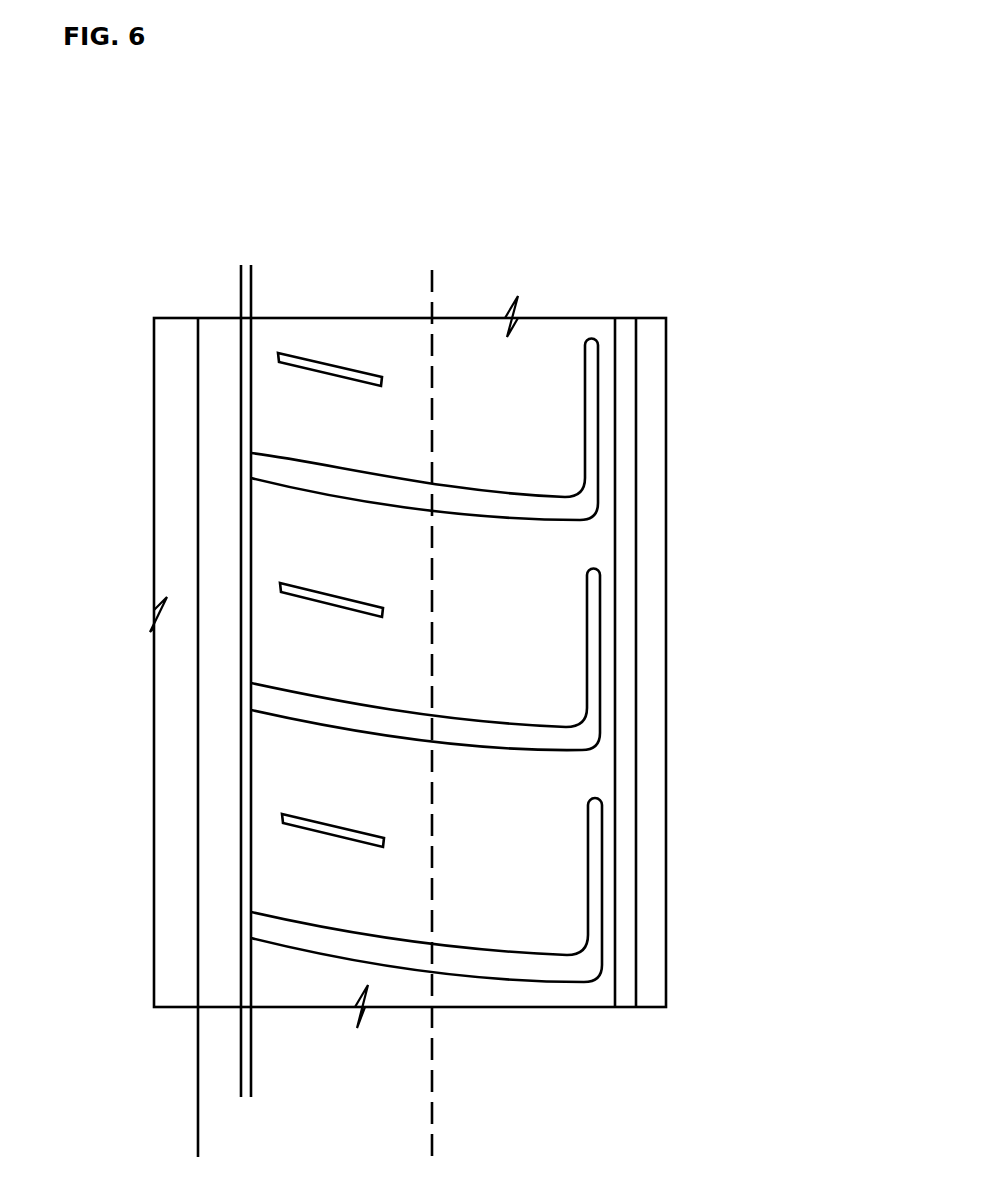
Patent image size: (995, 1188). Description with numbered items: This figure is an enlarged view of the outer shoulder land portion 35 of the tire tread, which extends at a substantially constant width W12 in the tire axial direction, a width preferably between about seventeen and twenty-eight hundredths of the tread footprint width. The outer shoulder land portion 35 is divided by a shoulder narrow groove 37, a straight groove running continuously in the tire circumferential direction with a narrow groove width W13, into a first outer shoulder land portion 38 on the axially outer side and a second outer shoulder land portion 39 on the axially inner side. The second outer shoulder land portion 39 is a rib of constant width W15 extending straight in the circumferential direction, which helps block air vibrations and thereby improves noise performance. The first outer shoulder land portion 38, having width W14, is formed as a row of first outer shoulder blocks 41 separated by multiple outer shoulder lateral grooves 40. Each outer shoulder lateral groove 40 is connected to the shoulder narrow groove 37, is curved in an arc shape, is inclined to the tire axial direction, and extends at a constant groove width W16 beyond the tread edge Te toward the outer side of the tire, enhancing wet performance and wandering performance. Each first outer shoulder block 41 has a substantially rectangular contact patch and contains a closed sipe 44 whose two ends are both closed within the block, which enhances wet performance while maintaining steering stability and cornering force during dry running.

The outer shoulder land portion 35 is at (352, 192).
The second outer shoulder land portion 39 is at (216, 346).
The first outer shoulder land portion 38 is at (386, 352).
The shoulder narrow groove 37 is at (243, 500).
The outer shoulder lateral groove 40 is at (410, 500).
The first outer shoulder block 41 is at (420, 617).
The closed sipe 44 is at (328, 602).
The tread edge Te is at (432, 696).
The groove width of shoulder narrow groove W13 is at (280, 272).
The width of first outer shoulder land portion W14 is at (251, 1092).
The width of second outer shoulder land portion W15 is at (198, 1092).
The width of outer shoulder land portion W12 is at (198, 1152).
The groove width of outer shoulder lateral groove W16 is at (523, 783).